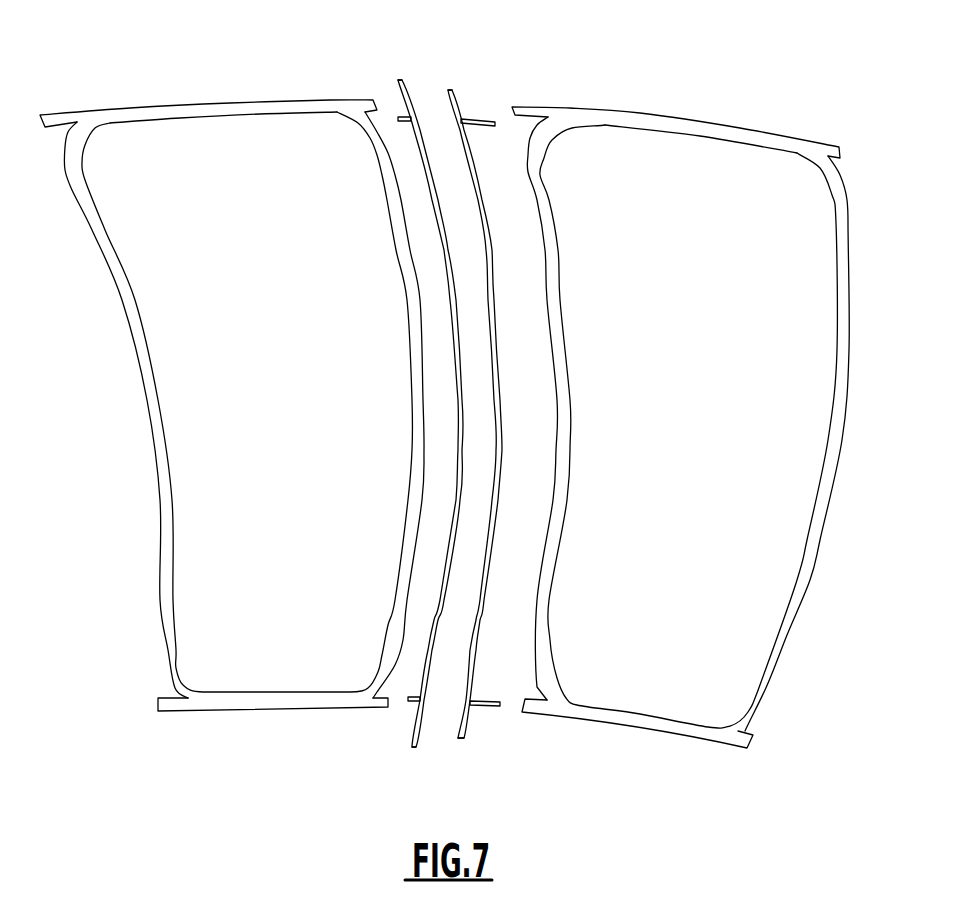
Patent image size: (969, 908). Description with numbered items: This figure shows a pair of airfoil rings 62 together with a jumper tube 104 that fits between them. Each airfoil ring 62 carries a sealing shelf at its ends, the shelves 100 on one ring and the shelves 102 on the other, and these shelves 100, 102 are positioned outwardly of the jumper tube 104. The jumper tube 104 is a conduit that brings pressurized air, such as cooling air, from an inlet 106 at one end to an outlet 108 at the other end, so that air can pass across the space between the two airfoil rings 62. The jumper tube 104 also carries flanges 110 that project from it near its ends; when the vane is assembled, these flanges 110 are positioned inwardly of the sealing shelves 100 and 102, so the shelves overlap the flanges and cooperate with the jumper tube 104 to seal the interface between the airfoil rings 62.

The airfoil ring 62 is at (851, 328).
The sealing shelf 100 is at (367, 100).
The sealing shelf 102 is at (523, 107).
The jumper tube 104 is at (484, 208).
The inlet 106 is at (425, 97).
The outlet 108 is at (445, 728).
The flange 110 is at (473, 119).